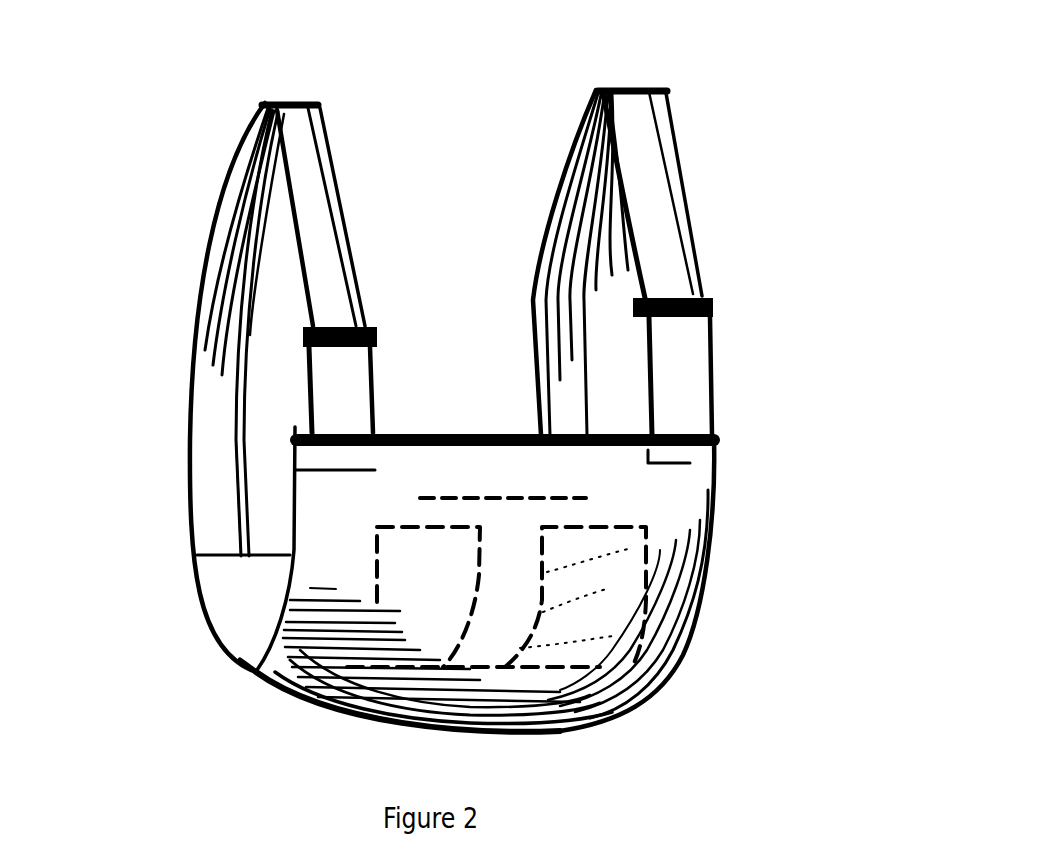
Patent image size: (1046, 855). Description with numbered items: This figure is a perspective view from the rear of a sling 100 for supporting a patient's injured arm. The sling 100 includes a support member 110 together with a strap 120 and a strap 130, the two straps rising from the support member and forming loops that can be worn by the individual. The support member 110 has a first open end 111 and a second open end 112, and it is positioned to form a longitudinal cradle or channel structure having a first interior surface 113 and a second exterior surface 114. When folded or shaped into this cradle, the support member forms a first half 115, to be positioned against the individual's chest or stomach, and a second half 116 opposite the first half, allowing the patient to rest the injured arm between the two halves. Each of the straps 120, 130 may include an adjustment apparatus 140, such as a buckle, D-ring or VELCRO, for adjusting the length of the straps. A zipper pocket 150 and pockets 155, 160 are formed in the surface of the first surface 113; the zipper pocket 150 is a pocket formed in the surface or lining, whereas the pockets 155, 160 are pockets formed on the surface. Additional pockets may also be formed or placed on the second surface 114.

The sling 100 is at (783, 131).
The support member 110 is at (713, 508).
The first open end 111 is at (752, 526).
The second open end 112 is at (180, 613).
The first interior surface 113 is at (237, 595).
The second exterior surface 114 is at (680, 653).
The first half 115 is at (430, 463).
The second half 116 is at (270, 548).
The strap 120 is at (620, 85).
The strap 130 is at (290, 102).
The adjustment apparatus 140 is at (620, 153).
The zipper pocket 150 is at (557, 494).
The pocket 155 is at (645, 540).
The pocket 160 is at (252, 672).